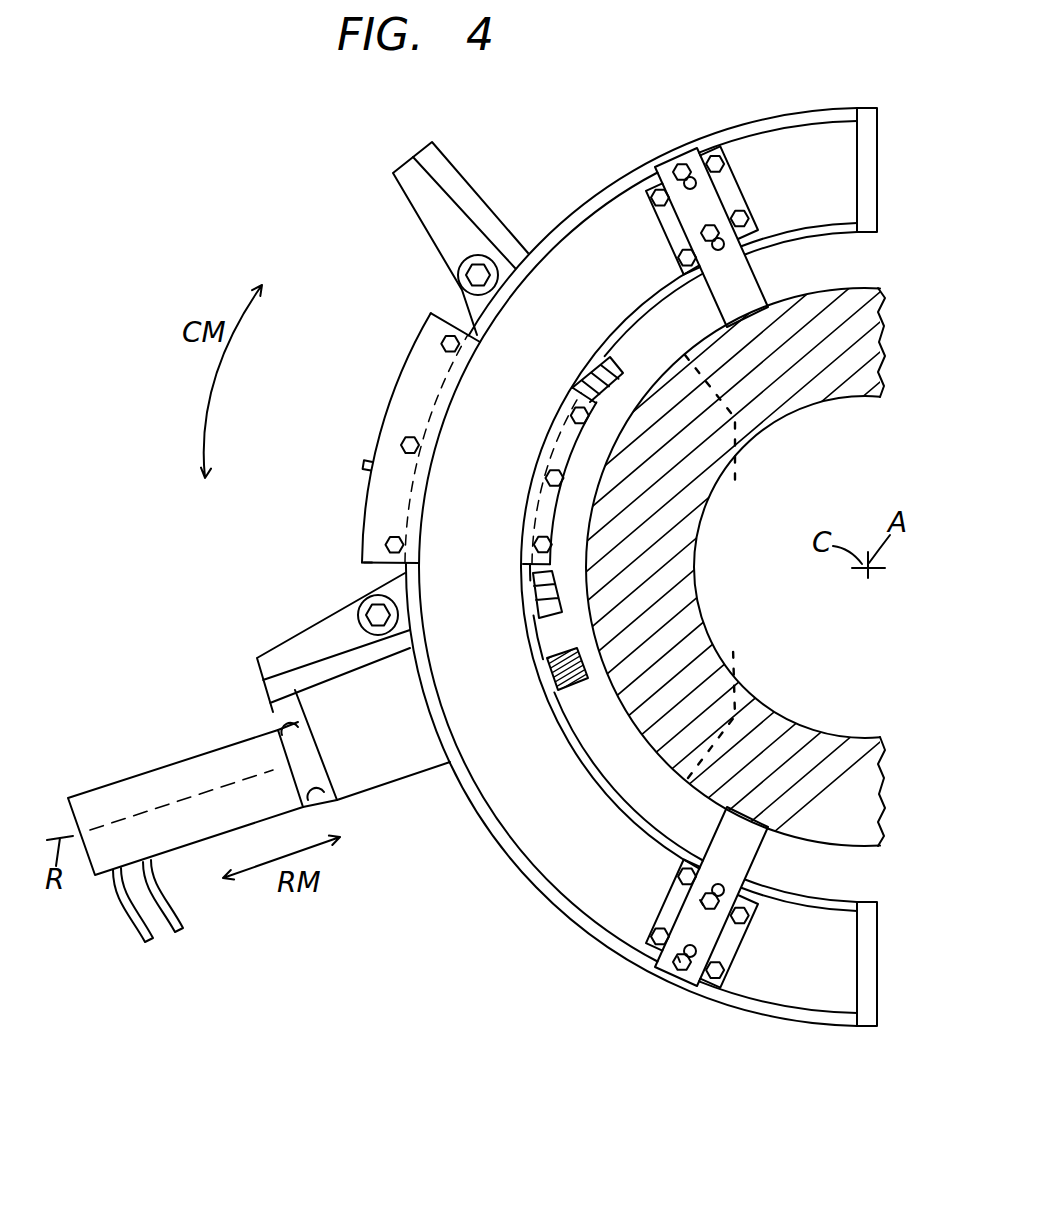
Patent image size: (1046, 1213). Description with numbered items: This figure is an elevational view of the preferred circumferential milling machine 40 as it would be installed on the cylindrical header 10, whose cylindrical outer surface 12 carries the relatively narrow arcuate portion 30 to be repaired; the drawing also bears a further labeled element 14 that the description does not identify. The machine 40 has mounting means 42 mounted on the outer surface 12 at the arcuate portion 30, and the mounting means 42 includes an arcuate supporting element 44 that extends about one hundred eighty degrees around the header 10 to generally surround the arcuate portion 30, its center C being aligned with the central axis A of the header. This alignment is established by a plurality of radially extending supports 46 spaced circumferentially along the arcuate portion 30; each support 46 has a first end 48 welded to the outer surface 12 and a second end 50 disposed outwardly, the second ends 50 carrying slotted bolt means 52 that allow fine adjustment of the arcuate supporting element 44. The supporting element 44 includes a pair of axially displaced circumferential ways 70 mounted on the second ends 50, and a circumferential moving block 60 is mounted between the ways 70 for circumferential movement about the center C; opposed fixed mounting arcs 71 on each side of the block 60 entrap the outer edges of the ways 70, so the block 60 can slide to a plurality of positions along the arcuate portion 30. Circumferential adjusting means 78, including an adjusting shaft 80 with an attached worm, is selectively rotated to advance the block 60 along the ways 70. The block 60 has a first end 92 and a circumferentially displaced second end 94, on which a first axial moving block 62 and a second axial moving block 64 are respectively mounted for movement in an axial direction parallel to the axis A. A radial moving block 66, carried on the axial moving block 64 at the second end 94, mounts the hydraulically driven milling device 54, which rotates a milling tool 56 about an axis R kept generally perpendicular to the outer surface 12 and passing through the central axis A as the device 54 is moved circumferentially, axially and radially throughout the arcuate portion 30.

The cylindrical header 10 is at (885, 259).
The cylindrical outer surface 12 is at (813, 293).
The second pipe section 14 is at (821, 760).
The arcuate portion 30 is at (739, 468).
The circumferential milling machine 40 is at (309, 246).
The mounting means 42 is at (467, 891).
The arcuate supporting element 44 is at (544, 567).
The radially extending supports 46 is at (720, 187).
The first end 48 is at (722, 290).
The second ends 50 is at (701, 180).
The slotted bolt means 52 is at (678, 957).
The milling device 54 is at (181, 770).
The milling tool 56 is at (583, 684).
The circumferential moving block 60 is at (379, 427).
The first axial moving block 62 is at (420, 202).
The second axial moving block 64 is at (312, 637).
The radial moving block 66 is at (302, 720).
The circumferential ways 70 is at (582, 236).
The fixed mounting arcs 71 is at (393, 511).
The circumferential adjusting means 78 is at (310, 492).
The adjusting shaft 80 is at (365, 463).
The first end 92 is at (435, 320).
The second end 94 is at (377, 553).